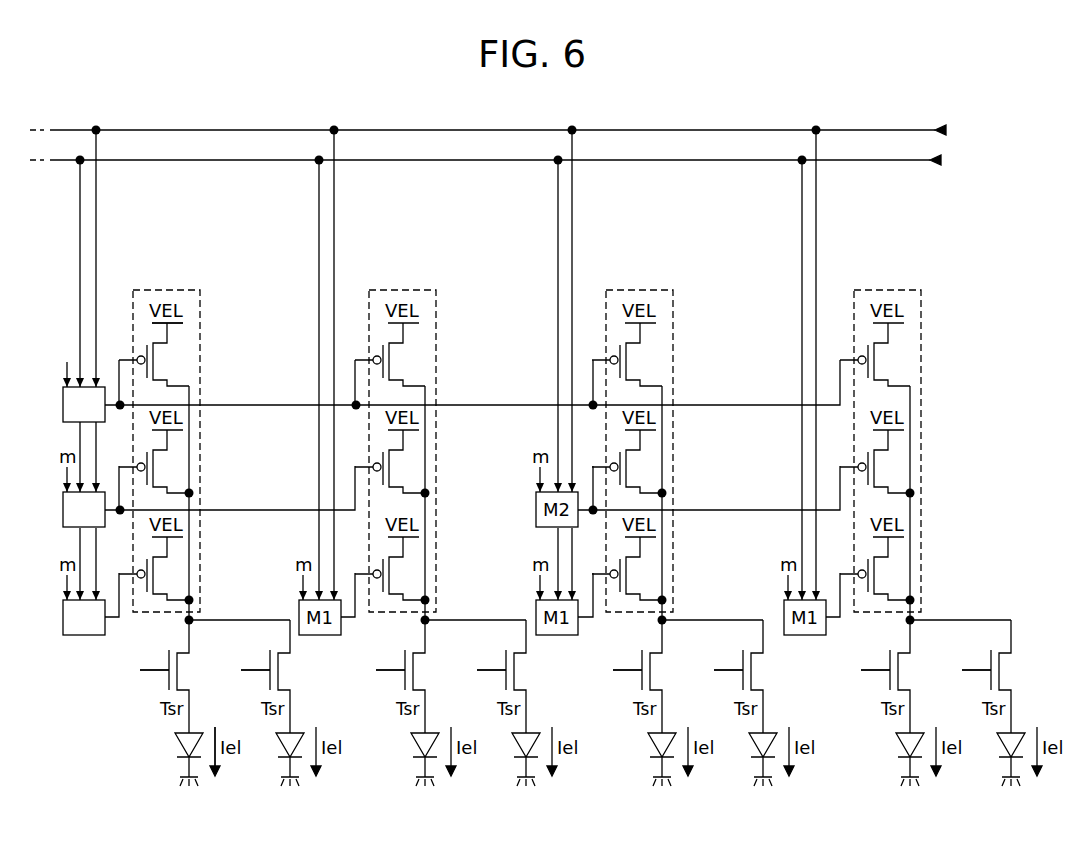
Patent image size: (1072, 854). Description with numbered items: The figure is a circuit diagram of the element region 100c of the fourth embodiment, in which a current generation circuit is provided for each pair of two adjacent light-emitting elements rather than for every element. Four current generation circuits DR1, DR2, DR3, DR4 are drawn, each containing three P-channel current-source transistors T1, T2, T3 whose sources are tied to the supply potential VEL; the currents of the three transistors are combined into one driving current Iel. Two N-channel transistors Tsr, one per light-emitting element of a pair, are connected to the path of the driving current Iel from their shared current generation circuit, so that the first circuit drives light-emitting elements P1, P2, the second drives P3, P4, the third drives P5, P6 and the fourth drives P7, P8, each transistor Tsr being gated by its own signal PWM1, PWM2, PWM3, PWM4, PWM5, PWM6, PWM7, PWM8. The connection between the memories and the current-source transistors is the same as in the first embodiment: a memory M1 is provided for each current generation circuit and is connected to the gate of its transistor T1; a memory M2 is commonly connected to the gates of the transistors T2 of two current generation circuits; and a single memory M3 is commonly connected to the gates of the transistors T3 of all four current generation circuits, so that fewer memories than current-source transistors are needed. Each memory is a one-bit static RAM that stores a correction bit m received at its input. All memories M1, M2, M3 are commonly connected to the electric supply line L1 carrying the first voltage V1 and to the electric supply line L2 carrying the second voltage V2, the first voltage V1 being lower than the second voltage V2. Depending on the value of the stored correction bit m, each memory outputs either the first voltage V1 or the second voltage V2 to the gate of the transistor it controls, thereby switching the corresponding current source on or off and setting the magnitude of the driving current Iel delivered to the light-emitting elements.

The element region 100c is at (917, 98).
The electric supply line L1 is at (60, 128).
The electric supply line L2 is at (60, 163).
The first voltage V1 is at (955, 129).
The second voltage V2 is at (953, 159).
The current generation circuit DR1 is at (160, 290).
The current generation circuit DR2 is at (396, 290).
The current generation circuit DR3 is at (633, 290).
The current generation circuit DR4 is at (881, 290).
The transistor T1 is at (154, 557).
The transistor T2 is at (154, 450).
The transistor T3 is at (154, 343).
The power supply voltage VEL is at (166, 311).
The memory M1 is at (84, 617).
The memory M2 is at (84, 509).
The memory M3 is at (84, 404).
The correction bit m is at (68, 364).
The PWM signal PWM1 is at (128, 670).
The PWM signal PWM2 is at (229, 670).
The PWM signal PWM3 is at (364, 670).
The PWM signal PWM4 is at (465, 670).
The PWM signal PWM5 is at (601, 670).
The PWM signal PWM6 is at (702, 670).
The PWM signal PWM7 is at (849, 670).
The PWM signal PWM8 is at (950, 670).
The transistor Tsr is at (189, 703).
The light-emitting element P1 is at (181, 745).
The light-emitting element P2 is at (282, 745).
The light-emitting element P3 is at (417, 745).
The light-emitting element P4 is at (518, 745).
The light-emitting element P5 is at (654, 745).
The light-emitting element P6 is at (755, 745).
The light-emitting element P7 is at (902, 745).
The light-emitting element P8 is at (1003, 745).
The driving current Iel is at (228, 748).